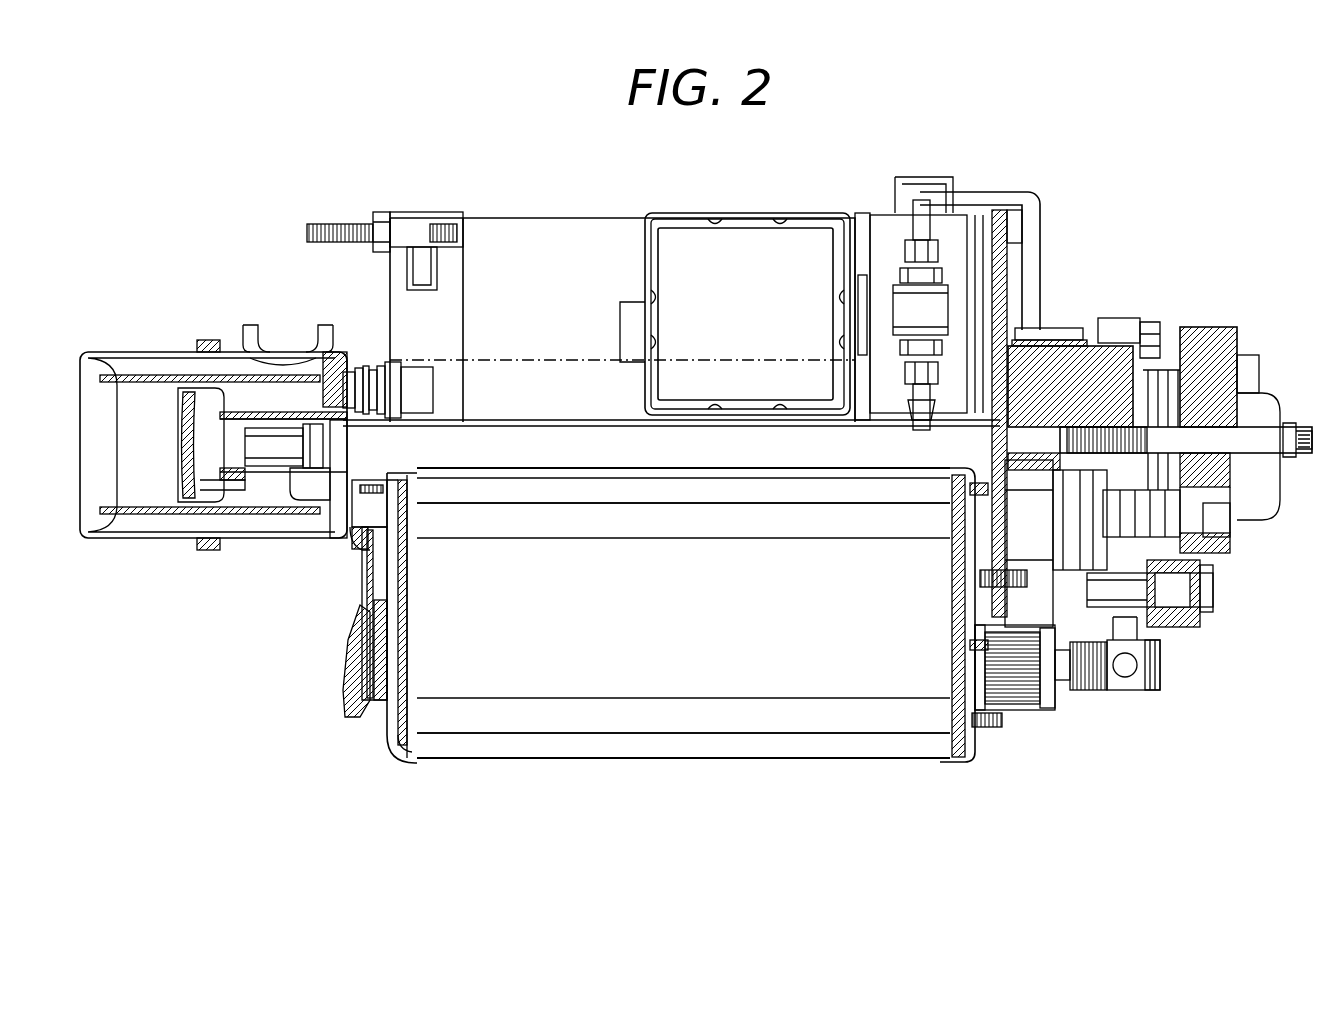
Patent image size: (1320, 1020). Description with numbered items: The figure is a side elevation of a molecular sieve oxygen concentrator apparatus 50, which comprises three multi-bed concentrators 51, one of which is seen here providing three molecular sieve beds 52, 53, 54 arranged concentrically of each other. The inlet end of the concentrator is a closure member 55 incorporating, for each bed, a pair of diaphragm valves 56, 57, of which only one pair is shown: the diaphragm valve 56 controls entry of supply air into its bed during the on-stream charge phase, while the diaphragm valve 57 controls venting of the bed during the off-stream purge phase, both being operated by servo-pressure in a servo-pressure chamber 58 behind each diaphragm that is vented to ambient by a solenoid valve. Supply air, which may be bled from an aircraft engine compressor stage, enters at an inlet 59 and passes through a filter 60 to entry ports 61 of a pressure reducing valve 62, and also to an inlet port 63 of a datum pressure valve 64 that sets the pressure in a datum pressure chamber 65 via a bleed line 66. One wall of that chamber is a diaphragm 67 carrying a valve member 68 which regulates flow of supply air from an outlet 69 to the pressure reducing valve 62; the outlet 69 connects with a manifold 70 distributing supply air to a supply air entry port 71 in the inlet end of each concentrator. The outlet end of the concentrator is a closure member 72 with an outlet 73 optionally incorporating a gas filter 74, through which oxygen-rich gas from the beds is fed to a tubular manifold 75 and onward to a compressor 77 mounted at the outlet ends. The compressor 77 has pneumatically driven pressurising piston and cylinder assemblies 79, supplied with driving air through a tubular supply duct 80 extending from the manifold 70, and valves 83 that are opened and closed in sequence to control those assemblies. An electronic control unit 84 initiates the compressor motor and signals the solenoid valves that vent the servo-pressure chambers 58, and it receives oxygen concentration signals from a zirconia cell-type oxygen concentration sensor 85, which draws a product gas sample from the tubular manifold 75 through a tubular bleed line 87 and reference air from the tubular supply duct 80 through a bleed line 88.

The oxygen concentrator apparatus 50 is at (717, 768).
The multi-bed concentrator 51 is at (568, 216).
The molecular sieve bed 52 is at (681, 674).
The molecular sieve bed 53 is at (597, 720).
The molecular sieve bed 54 is at (648, 743).
The closure member 55 is at (413, 763).
The diaphragm valve 56 is at (370, 578).
The diaphragm valve 57 is at (398, 665).
The servo-pressure chamber 58 is at (357, 658).
The inlet 59 is at (300, 335).
The filter 60 is at (147, 375).
The entry port 61 is at (283, 478).
The pressure reducing valve 62 is at (182, 450).
The inlet port 63 is at (340, 393).
The datum pressure valve 64 is at (423, 390).
The datum pressure chamber 65 is at (207, 484).
The bleed line 66 is at (243, 400).
The diaphragm 67 is at (183, 398).
The valve member 68 is at (272, 447).
The outlet 69 is at (333, 457).
The manifold 70 is at (352, 532).
The supply air entry port 71 is at (380, 512).
The closure member 72 is at (950, 770).
The outlet 73 is at (1093, 690).
The gas filter 74 is at (1025, 690).
The tubular manifold 75 is at (1137, 637).
The compressor 77 is at (1118, 362).
The pressurising piston and cylinder assembly 79 is at (1212, 592).
The tubular supply duct 80 is at (774, 462).
The valve 83 is at (1230, 540).
The electronic control unit 84 is at (770, 243).
The oxygen concentration sensor 85 is at (887, 300).
The tubular bleed line 87 is at (1040, 243).
The bleed line 88 is at (922, 424).